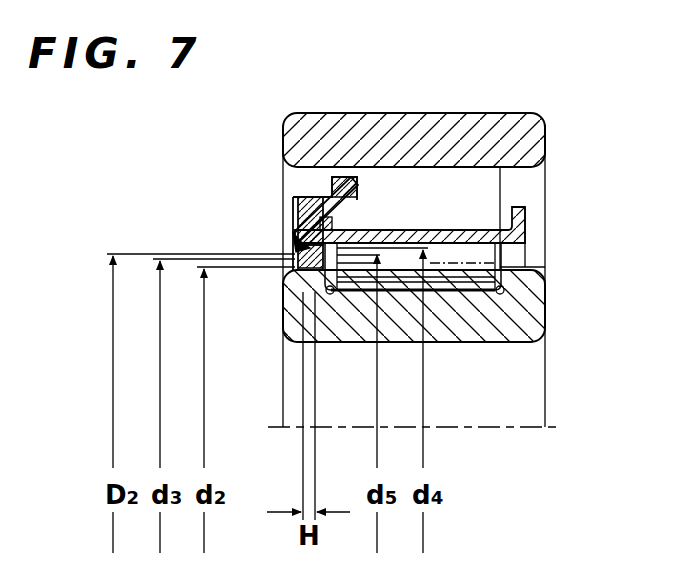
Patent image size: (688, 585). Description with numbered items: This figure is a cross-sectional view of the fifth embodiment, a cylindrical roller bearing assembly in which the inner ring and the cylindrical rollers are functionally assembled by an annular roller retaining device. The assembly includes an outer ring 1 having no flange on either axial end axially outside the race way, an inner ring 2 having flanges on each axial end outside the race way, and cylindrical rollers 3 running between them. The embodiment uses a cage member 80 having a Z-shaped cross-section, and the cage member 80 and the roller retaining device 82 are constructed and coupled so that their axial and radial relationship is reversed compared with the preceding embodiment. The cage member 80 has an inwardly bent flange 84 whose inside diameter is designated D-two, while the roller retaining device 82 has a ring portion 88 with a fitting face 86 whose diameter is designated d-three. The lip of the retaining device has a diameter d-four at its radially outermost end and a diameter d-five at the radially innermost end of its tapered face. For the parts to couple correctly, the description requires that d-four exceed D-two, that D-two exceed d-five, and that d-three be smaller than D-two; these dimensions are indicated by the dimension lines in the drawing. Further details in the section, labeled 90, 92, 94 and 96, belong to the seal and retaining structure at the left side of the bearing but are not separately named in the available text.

The outer ring 1 is at (533, 128).
The inner ring 2 is at (530, 316).
The cylindrical roller 3 is at (477, 187).
The cage member 80 is at (463, 243).
The roller retaining device 82 is at (313, 190).
The inwardly bent flange 84 is at (345, 218).
The fitting face 86 is at (297, 247).
The ring portion 88 is at (295, 200).
The seal lip base 90 is at (335, 232).
The seal lip 92 is at (352, 225).
The inner race flange 94 is at (527, 219).
The lip edge 96 is at (295, 233).